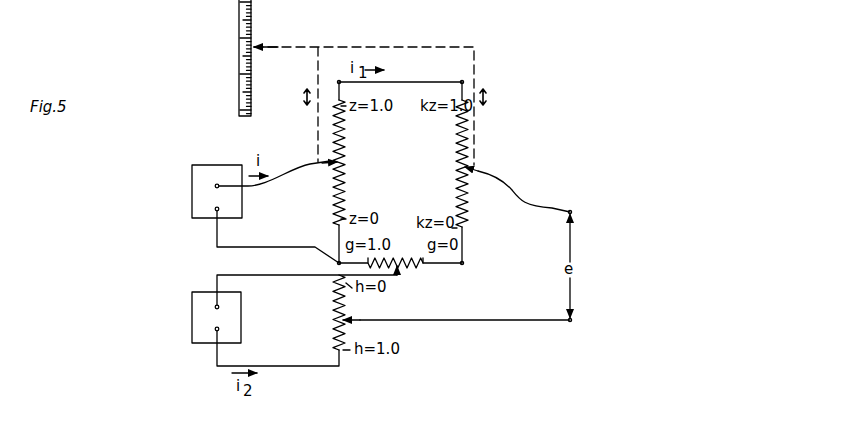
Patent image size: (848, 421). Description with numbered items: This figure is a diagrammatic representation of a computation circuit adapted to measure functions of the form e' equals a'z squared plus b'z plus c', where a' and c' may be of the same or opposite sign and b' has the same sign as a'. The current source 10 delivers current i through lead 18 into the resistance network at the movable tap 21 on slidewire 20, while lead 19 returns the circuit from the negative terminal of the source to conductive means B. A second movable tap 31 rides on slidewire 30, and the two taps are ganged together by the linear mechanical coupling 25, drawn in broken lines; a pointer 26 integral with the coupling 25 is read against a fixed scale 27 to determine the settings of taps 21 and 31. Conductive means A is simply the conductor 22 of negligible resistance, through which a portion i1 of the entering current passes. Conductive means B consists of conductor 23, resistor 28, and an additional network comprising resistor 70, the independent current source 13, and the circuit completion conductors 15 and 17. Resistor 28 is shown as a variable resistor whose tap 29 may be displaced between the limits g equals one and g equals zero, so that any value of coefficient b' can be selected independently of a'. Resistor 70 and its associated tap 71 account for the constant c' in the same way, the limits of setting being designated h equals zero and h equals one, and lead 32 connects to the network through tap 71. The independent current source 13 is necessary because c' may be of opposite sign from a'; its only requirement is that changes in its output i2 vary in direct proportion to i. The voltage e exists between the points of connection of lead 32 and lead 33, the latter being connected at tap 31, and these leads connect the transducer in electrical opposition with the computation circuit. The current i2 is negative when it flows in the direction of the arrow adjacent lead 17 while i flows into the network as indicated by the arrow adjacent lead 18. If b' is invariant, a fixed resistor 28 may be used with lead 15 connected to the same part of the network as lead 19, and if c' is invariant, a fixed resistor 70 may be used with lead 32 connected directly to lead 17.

The current source 10 is at (192, 188).
The independent current source 13 is at (192, 326).
The circuit completion conductor 15 is at (248, 278).
The circuit completion conductor 17 is at (276, 366).
The lead 18 is at (274, 180).
The lead 19 is at (246, 248).
The slidewire 20 is at (345, 176).
The movable tap 21 is at (334, 168).
The conductor 22 is at (392, 83).
The conductor 23 is at (454, 266).
The linear mechanical coupling 25 is at (377, 47).
The pointer 26 is at (264, 46).
The fixed scale 27 is at (238, 22).
The resistor 28 is at (380, 260).
The tap 29 is at (399, 270).
The slidewire 30 is at (456, 148).
The movable tap 31 is at (468, 172).
The lead 32 is at (467, 320).
The lead 33 is at (524, 189).
The resistor 70 is at (334, 300).
The tap 71 is at (350, 318).